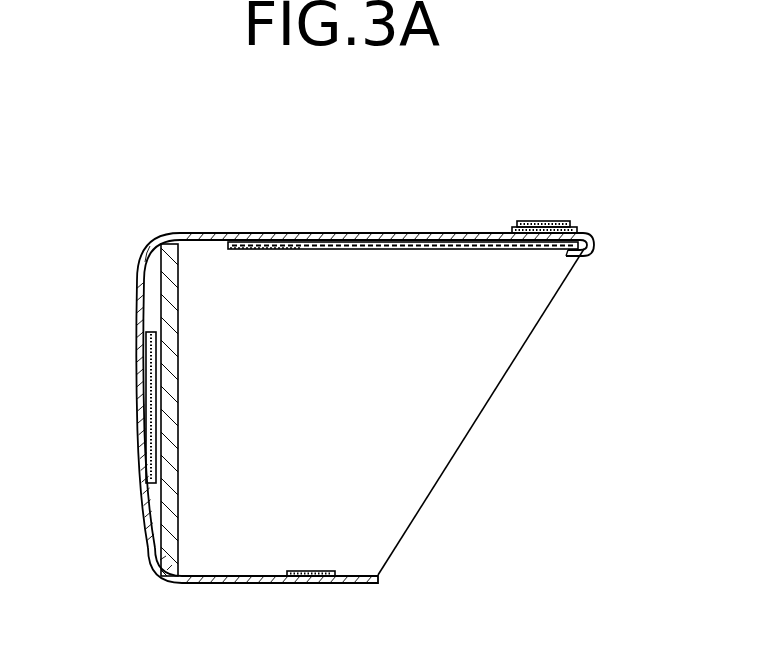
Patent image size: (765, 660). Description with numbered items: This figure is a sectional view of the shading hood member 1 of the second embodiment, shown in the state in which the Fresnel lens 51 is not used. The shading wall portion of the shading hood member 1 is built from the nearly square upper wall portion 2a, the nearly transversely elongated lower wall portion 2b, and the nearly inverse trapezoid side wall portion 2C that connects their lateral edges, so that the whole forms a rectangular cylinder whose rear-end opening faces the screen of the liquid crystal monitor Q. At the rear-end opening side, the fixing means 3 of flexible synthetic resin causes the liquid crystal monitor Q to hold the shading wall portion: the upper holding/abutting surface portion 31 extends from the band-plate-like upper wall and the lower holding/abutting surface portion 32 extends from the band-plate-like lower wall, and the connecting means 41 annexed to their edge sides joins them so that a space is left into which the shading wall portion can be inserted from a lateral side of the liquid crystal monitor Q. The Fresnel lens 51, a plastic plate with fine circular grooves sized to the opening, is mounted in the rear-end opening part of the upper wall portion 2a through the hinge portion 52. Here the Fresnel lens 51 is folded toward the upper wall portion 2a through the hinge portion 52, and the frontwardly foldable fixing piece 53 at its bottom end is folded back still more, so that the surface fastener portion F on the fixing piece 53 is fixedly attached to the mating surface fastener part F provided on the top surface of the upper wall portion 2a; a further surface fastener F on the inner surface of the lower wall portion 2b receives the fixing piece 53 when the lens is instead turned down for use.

The shading hood member 1 is at (125, 225).
The upper wall portion 2a is at (392, 237).
The lower wall portion 2b is at (252, 584).
The side wall portion 2C is at (450, 427).
The fixing means 3 is at (73, 390).
The upper holding/abutting surface portion 31 is at (138, 412).
The lower holding/abutting surface portion 32 is at (150, 506).
The connecting means 41 is at (143, 333).
The Fresnel lens 51 is at (448, 253).
The hinge portion 52 is at (265, 249).
The fixing piece 53 is at (512, 229).
The surface fastener portion F is at (549, 221).
The liquid crystal monitor Q is at (168, 388).